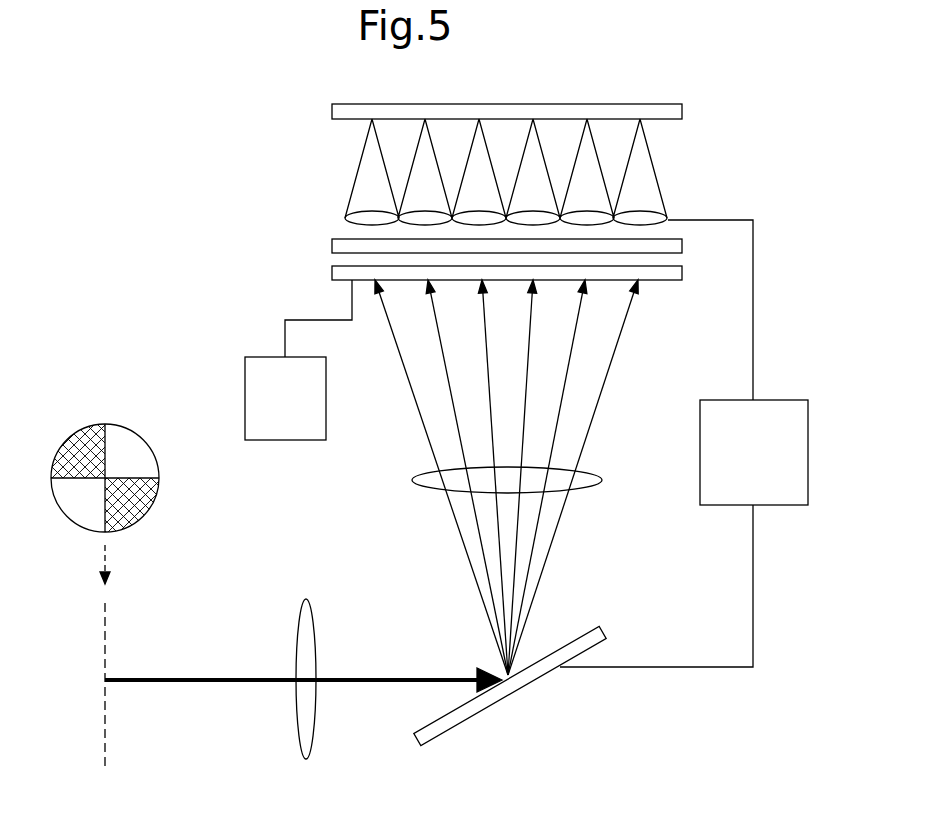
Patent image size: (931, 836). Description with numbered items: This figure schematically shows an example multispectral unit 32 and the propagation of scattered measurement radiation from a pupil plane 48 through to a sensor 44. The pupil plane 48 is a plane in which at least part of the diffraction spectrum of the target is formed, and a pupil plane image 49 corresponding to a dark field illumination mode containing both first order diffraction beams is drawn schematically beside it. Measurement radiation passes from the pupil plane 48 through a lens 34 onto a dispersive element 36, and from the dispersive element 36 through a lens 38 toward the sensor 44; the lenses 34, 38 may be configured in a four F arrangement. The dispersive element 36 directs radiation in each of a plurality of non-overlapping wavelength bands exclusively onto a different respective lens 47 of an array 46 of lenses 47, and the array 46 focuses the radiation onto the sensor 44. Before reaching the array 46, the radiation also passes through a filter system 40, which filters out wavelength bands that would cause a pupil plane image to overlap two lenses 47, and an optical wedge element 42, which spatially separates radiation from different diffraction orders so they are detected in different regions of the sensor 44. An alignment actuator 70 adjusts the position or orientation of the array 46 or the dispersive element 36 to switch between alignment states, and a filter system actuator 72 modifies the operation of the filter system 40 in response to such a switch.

The multispectral unit 32 is at (134, 192).
The lens 34 is at (306, 759).
The dispersive element 36 is at (518, 693).
The lens 38 is at (602, 480).
The filter system 40 is at (332, 274).
The optical wedge element 42 is at (332, 247).
The sensor 44 is at (332, 112).
The array of lenses 46 is at (461, 175).
The lens 47 is at (639, 216).
The pupil plane 48 is at (104, 766).
The pupil plane image 49 is at (146, 438).
The alignment actuator 70 is at (767, 462).
The filter system actuator 72 is at (298, 408).